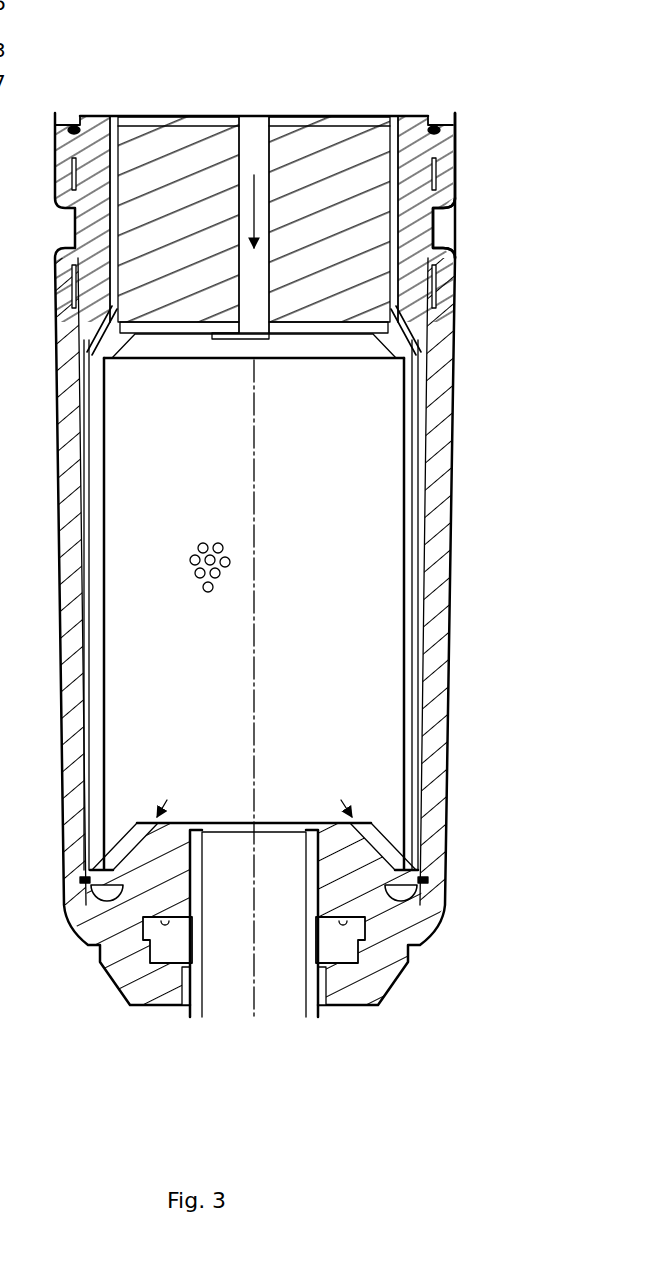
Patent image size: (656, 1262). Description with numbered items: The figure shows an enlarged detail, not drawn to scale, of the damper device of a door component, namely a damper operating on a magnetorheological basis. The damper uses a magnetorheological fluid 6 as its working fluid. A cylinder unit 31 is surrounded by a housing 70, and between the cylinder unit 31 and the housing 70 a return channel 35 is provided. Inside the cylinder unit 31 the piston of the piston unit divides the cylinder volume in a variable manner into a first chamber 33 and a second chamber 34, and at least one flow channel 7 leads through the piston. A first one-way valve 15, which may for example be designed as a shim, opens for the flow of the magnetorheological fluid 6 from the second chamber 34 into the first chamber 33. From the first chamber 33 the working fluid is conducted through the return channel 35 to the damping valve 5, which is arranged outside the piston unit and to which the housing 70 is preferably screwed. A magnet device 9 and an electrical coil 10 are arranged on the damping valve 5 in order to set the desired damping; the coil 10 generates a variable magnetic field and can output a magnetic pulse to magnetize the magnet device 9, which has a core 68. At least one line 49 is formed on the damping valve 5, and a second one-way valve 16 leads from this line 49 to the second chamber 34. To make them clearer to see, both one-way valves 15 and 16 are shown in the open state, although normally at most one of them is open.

The damping valve 5 is at (470, 222).
The magnetorheological fluid 6 is at (190, 580).
The flow channel 7 is at (402, 238).
The magnet device 9 is at (380, 102).
The electrical coil 10 is at (298, 117).
The first one-way valve 15 is at (120, 885).
The second one-way valve 16 is at (266, 344).
The cylinder unit 31 is at (405, 605).
The first chamber 33 is at (402, 893).
The second chamber 34 is at (356, 478).
The return channel 35 is at (418, 575).
The line 49 is at (253, 127).
The core 68 is at (189, 140).
The housing 70 is at (450, 715).